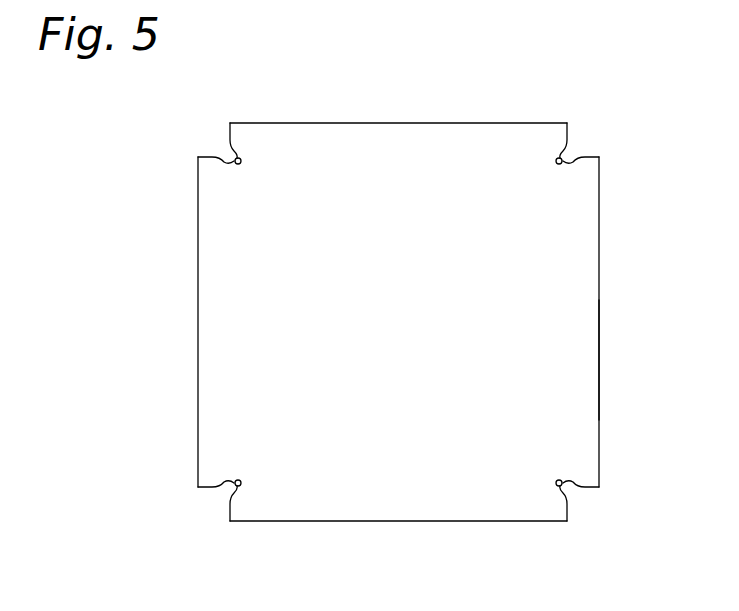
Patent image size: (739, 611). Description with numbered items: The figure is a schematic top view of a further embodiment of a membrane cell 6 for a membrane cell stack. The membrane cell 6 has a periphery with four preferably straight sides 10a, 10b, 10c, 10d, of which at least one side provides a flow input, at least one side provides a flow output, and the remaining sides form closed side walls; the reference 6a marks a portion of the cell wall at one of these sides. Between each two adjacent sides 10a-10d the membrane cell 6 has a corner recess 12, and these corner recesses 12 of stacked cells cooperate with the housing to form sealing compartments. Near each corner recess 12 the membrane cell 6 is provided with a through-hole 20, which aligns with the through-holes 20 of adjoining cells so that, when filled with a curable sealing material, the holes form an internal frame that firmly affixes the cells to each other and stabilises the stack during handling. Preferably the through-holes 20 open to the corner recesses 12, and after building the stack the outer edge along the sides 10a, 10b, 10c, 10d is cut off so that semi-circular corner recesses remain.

The membrane cell 6 is at (394, 324).
The frame inner wall 6a is at (558, 362).
The side of the membrane cell 10a is at (405, 521).
The side of the membrane cell 10b is at (198, 316).
The side of the membrane cell 10c is at (405, 123).
The side of the membrane cell 10d is at (599, 284).
The corner recess 12 is at (226, 156).
The through-hole 20 is at (241, 161).